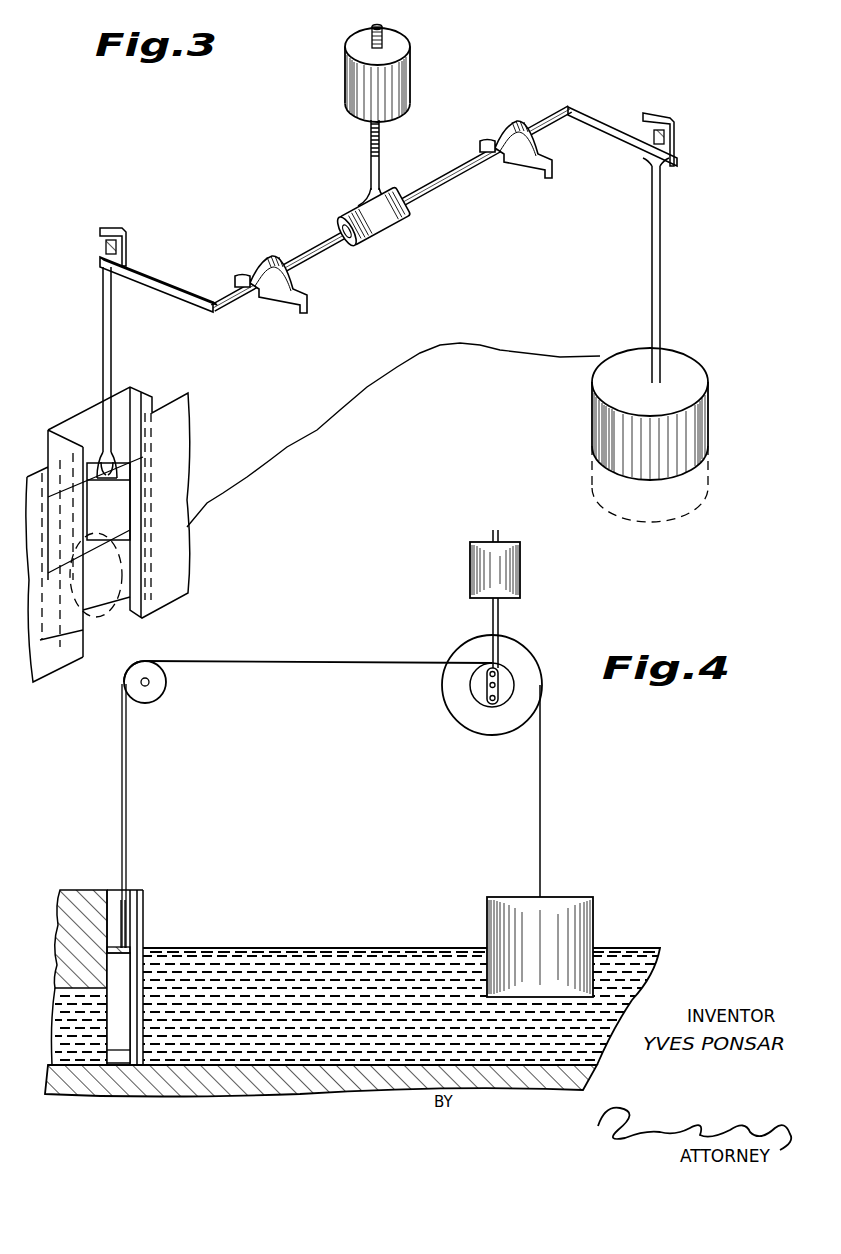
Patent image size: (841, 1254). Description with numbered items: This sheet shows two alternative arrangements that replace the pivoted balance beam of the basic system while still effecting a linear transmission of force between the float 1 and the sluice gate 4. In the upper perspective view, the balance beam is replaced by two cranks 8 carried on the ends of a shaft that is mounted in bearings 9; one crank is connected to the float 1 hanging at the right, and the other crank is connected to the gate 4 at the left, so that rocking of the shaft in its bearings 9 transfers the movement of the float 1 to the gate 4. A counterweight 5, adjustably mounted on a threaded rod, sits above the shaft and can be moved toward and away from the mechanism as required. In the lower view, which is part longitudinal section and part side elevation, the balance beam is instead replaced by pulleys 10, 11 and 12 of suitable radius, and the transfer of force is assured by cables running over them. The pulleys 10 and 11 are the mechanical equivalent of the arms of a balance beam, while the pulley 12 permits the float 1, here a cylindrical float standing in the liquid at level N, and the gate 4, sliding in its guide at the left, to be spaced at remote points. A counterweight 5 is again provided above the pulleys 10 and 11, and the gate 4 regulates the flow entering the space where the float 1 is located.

In FIG. 3, the float 1 is at (598, 432).
In FIG. 4, the float 1 is at (572, 910).
In FIG. 3, the sluice gate 4 is at (120, 517).
In FIG. 4, the sluice gate 4 is at (130, 972).
In FIG. 3, the counterweight 5 is at (417, 80).
In FIG. 4, the counterweight 5 is at (520, 577).
In FIG. 3, the cranks 8 is at (163, 288).
In FIG. 3, the bearings 9 is at (271, 262).
In FIG. 4, the pulley 10 is at (522, 655).
In FIG. 4, the pulley 11 is at (503, 684).
In FIG. 4, the pulley 12 is at (153, 693).
In FIG. 3, the liquid level N is at (475, 345).
In FIG. 4, the liquid level N is at (415, 949).